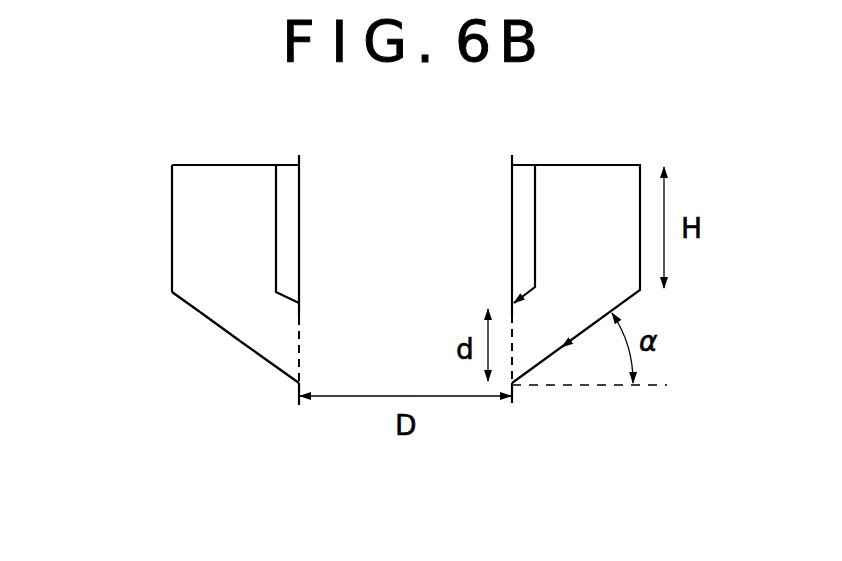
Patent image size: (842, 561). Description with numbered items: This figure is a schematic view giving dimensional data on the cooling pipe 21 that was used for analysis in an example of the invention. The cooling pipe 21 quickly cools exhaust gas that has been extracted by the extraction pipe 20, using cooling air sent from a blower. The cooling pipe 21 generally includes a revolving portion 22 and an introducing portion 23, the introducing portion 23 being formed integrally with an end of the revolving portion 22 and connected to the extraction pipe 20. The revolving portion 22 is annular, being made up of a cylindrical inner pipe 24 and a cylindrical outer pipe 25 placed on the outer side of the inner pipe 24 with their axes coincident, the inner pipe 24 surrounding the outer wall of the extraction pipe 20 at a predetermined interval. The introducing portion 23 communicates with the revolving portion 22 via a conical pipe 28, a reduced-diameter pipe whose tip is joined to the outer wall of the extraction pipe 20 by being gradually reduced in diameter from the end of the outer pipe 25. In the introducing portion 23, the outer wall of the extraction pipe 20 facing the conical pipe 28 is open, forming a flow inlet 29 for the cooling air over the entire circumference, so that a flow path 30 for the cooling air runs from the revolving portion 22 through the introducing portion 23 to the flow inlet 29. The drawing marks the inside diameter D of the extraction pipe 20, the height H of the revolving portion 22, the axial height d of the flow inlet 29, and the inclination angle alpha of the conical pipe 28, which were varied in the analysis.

The extraction pipe 20 is at (515, 395).
The cooling pipe 21 is at (174, 294).
The revolving portion 22 is at (207, 253).
The introducing portion 23 is at (269, 328).
The inner pipe 24 is at (277, 209).
The outer pipe 25 is at (172, 219).
The conical pipe 28 is at (217, 326).
The flow inlet 29 is at (303, 381).
The flow path 30 is at (577, 284).